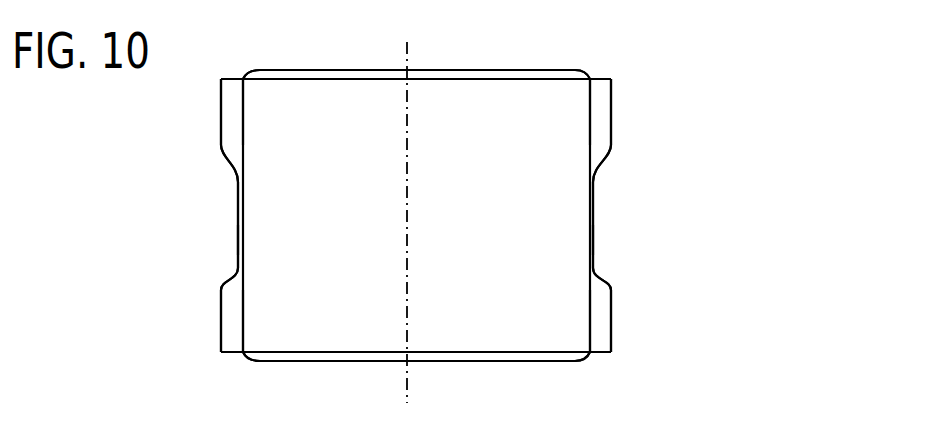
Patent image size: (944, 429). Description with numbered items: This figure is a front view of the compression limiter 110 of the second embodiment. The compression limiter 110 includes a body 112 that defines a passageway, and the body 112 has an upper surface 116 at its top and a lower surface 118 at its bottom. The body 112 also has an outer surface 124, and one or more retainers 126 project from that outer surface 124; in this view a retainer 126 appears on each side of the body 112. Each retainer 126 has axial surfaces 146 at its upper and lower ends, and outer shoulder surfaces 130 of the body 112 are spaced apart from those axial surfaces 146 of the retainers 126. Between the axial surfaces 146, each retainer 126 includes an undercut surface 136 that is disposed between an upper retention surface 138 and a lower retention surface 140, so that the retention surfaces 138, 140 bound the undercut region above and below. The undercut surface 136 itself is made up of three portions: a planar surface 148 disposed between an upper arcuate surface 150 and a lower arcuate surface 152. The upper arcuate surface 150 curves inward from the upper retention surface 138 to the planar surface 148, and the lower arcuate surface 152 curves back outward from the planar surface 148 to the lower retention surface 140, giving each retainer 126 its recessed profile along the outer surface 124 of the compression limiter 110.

The compression limiter 110 is at (708, 62).
The body 112 is at (503, 64).
The upper surface 116 is at (298, 70).
The lower surface 118 is at (285, 361).
The outer surface 124 is at (520, 234).
The retainer 126 is at (212, 129).
The outer shoulder surface 130 is at (249, 78).
The undercut surface 136 is at (238, 211).
The upper retention surface 138 is at (221, 87).
The lower retention surface 140 is at (221, 320).
The axial surface 146 is at (241, 78).
The planar surface 148 is at (238, 239).
The upper arcuate surface 150 is at (228, 162).
The lower arcuate surface 152 is at (236, 273).